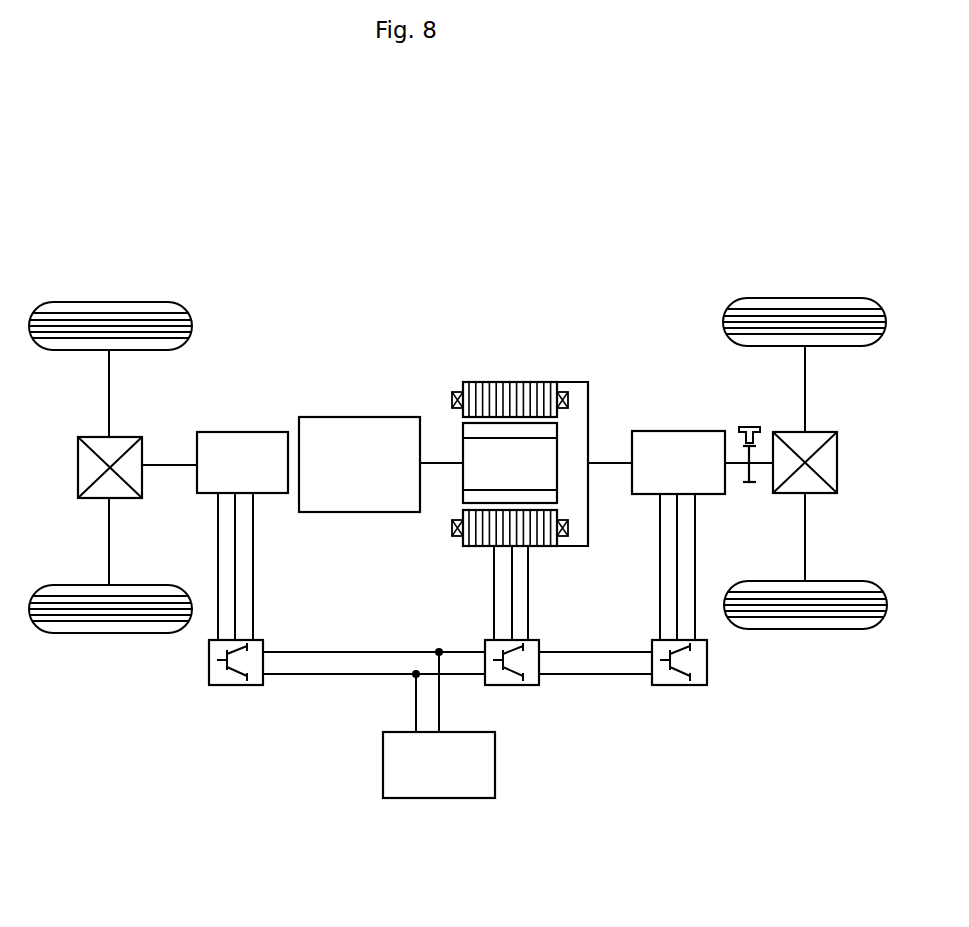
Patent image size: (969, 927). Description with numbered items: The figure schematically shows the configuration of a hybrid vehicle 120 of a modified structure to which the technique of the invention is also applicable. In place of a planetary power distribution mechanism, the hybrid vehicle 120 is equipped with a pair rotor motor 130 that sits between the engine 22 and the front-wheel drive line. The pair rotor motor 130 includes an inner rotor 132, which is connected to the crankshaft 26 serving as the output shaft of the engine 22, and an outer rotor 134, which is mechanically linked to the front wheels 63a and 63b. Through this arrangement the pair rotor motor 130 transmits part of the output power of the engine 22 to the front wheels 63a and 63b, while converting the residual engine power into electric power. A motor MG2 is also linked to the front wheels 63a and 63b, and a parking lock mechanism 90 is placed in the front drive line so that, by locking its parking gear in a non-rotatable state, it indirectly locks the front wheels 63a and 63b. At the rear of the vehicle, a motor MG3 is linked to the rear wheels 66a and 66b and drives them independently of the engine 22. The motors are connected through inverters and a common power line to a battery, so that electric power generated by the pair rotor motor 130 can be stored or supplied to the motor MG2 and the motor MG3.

The hybrid vehicle 120 is at (649, 262).
The pair rotor motor 130 is at (512, 262).
The inner rotor 132 is at (462, 453).
The outer rotor 134 is at (510, 382).
The engine 22 is at (358, 513).
The crankshaft 26 is at (438, 464).
The parking lock mechanism 90 is at (748, 418).
The front wheel 63a is at (806, 298).
The front wheel 63b is at (805, 629).
The rear wheel 66a is at (109, 302).
The rear wheel 66b is at (109, 633).
The motor MG3 is at (241, 432).
The motor MG2 is at (677, 430).